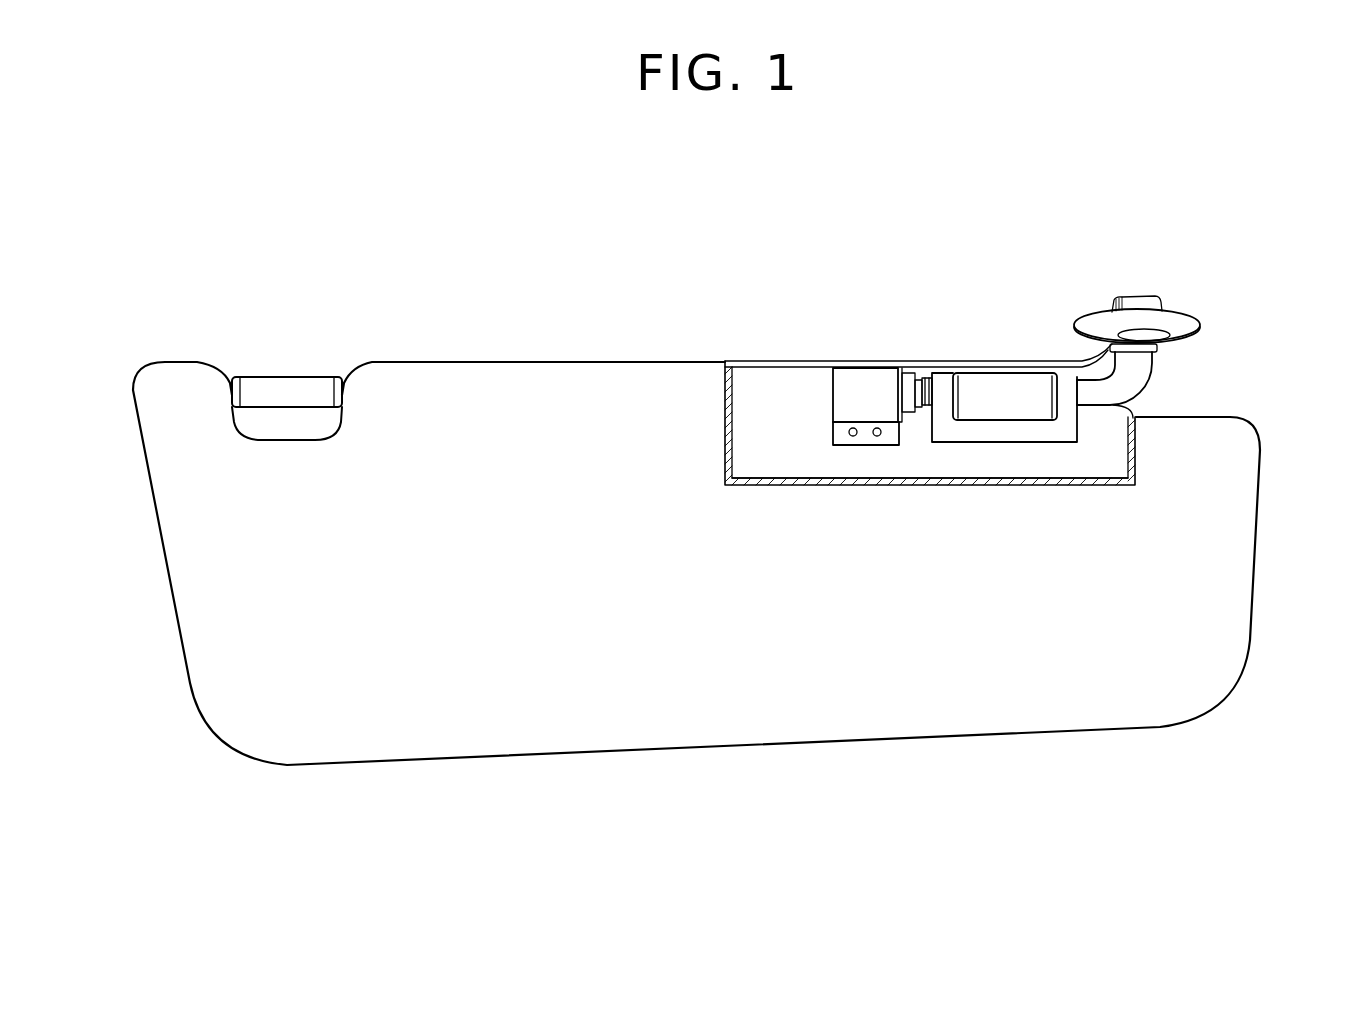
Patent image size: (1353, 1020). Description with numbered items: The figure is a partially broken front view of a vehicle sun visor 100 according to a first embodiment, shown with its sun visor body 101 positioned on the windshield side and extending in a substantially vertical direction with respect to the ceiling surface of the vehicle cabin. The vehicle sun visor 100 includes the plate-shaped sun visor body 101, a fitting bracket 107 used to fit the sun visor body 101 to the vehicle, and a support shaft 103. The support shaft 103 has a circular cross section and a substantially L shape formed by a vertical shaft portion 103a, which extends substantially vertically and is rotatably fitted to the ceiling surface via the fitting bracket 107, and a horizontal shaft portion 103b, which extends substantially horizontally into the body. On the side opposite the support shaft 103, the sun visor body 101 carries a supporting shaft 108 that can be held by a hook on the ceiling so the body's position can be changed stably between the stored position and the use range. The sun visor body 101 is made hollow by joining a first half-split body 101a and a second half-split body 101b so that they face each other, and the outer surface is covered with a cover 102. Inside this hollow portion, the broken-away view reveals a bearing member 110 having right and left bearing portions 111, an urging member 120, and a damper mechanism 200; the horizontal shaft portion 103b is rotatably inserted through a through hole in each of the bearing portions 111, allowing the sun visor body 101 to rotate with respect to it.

The vehicle sun visor 100 is at (448, 242).
The sun visor body 101 is at (570, 360).
The first half-split body 101a is at (728, 437).
The second half-split body 101b is at (775, 362).
The cover 102 is at (806, 486).
The support shaft 103 is at (1143, 391).
The vertical shaft portion 103a is at (1135, 360).
The horizontal shaft portion 103b is at (1092, 390).
The fitting bracket 107 is at (1197, 320).
The supporting shaft 108 is at (277, 385).
The bearing member 110 is at (973, 443).
The bearing portions 111 is at (944, 387).
The urging member 120 is at (1018, 407).
The damper mechanism 200 is at (869, 382).